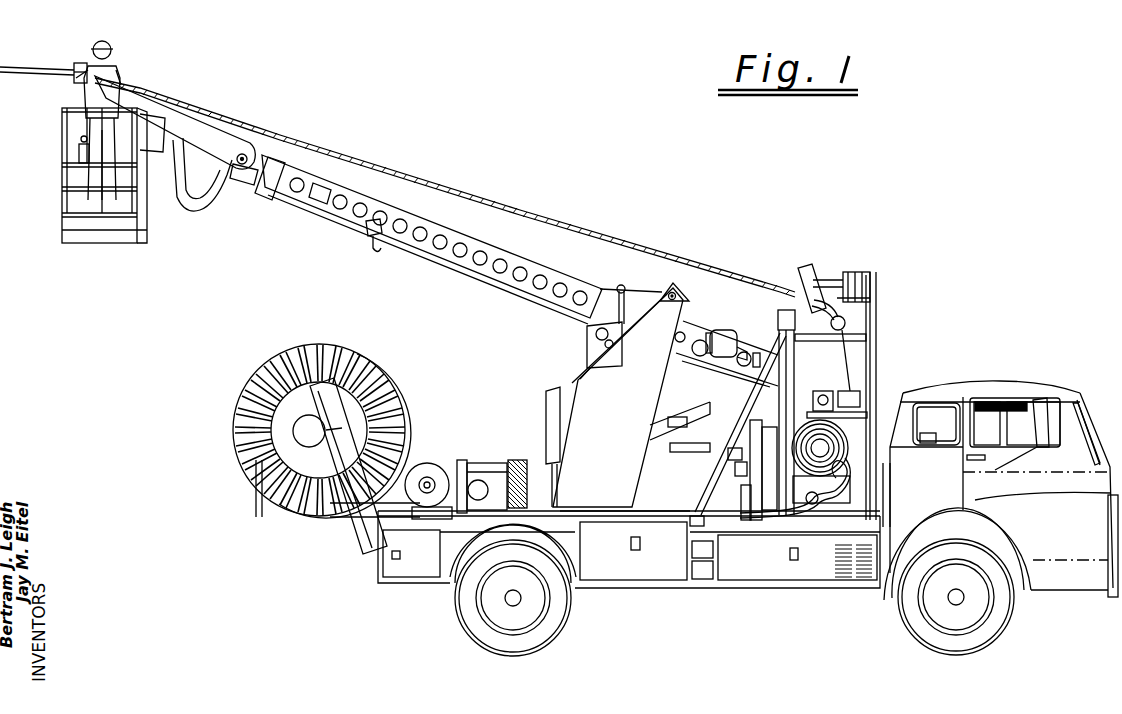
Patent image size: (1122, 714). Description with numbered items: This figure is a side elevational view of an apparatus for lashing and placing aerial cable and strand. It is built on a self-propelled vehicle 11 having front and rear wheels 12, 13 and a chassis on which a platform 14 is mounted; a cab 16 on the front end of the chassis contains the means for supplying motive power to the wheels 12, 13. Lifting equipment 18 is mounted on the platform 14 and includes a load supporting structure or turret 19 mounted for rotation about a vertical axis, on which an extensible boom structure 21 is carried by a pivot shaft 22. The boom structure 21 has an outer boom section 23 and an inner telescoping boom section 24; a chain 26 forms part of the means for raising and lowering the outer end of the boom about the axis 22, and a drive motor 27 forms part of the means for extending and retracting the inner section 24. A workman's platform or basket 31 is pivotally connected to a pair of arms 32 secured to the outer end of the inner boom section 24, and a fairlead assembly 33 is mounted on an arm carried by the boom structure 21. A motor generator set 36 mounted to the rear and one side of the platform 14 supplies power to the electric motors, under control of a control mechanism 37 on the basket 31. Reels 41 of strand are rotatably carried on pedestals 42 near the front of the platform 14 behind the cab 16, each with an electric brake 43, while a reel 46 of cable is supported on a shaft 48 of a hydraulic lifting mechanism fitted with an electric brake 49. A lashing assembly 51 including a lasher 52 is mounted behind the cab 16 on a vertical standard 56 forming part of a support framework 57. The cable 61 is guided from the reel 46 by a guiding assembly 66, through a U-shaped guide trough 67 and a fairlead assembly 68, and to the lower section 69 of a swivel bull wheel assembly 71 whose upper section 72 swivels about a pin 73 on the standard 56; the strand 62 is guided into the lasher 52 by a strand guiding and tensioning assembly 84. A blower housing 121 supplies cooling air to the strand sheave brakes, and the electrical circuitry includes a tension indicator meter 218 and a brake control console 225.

The self-propelled vehicle 11 is at (1034, 335).
The front wheels 12 is at (929, 629).
The rear wheels 13 is at (476, 628).
The platform 14 is at (200, 121).
The cab 16 is at (1041, 386).
The lifting equipment 18 is at (628, 388).
The load supporting structure or turret 19 is at (614, 396).
The extensible boom structure 21 is at (516, 299).
The pivot shaft 22 is at (670, 289).
The outer boom section 23 is at (458, 261).
The inner telescoping boom section 24 is at (260, 190).
The chain 26 is at (676, 417).
The drive motor 27 is at (733, 340).
The workman's platform or basket 31 is at (66, 241).
The arms 32 is at (215, 162).
The fairlead assembly 33 is at (85, 62).
The motor generator set 36 is at (499, 459).
The control mechanism 37 is at (78, 147).
The strand reels 41 is at (768, 432).
The pedestals 42 is at (746, 500).
The electric brake 43 is at (737, 469).
The cable reel 46 is at (392, 366).
The shaft 48 is at (322, 413).
The electric brake 49 is at (302, 438).
The lashing assembly 51 is at (866, 367).
The lasher 52 is at (860, 395).
The vertical standard 56 is at (876, 330).
The support framework 57 is at (880, 367).
The cable 61 is at (772, 526).
The strand 62 is at (790, 362).
The guiding assembly 66 is at (460, 463).
The U-shaped guide trough 67 is at (650, 512).
The fairlead assembly 68 is at (690, 525).
The lower section 69 is at (841, 498).
The swivel bull wheel assembly 71 is at (819, 266).
The upper section 72 is at (826, 314).
The pin 73 is at (845, 272).
The strand guiding and tensioning assembly 84 is at (828, 386).
The blower housing 121 is at (852, 572).
The meter 218 is at (938, 448).
The brake control console 225 is at (680, 453).